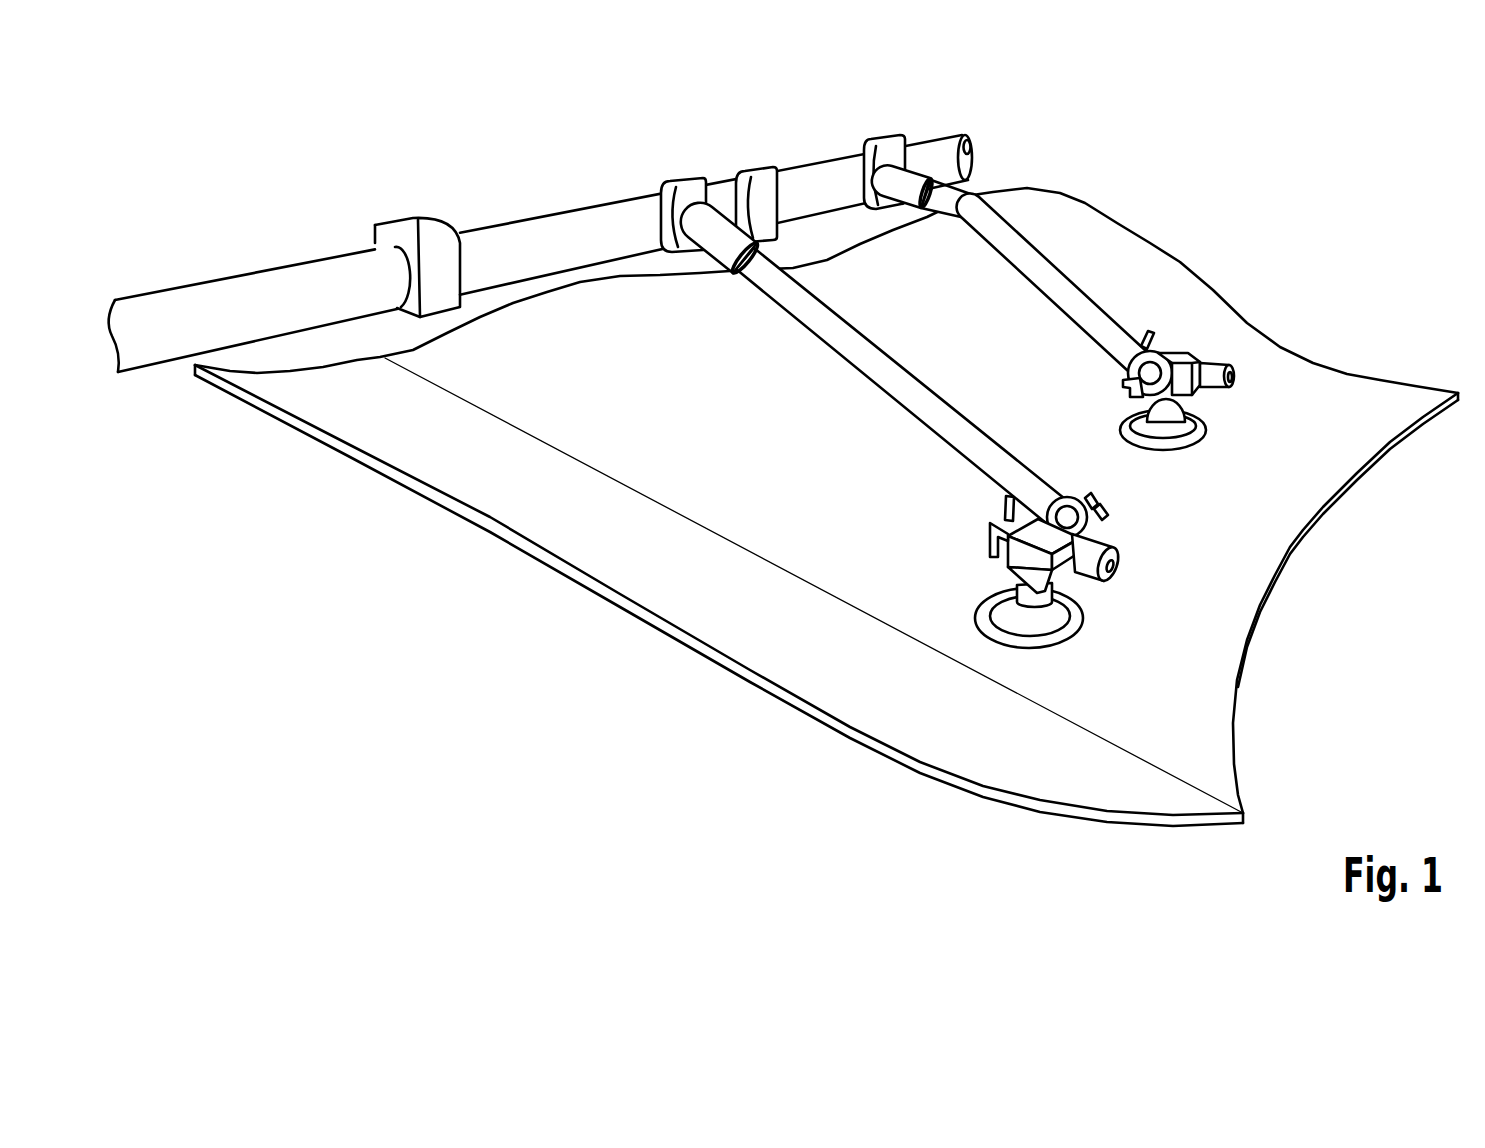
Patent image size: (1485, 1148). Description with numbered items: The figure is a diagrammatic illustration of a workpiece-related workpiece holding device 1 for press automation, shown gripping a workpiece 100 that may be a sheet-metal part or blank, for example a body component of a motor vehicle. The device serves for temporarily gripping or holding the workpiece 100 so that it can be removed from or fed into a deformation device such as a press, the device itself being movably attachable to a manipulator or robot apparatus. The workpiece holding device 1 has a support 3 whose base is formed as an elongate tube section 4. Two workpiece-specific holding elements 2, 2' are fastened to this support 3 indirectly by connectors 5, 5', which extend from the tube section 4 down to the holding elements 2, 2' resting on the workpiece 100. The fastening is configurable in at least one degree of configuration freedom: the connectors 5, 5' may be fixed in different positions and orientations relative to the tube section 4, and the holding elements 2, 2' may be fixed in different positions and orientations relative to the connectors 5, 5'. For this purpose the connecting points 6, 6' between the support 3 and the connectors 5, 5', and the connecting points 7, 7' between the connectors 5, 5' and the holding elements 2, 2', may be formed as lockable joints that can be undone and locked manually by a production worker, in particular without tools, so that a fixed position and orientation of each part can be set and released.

The workpiece holding device 1 is at (402, 165).
The workpiece-specific holding element 2 is at (1062, 615).
The workpiece-specific holding element 2' is at (1196, 424).
The support 3 is at (575, 298).
The tube section 4 is at (561, 228).
The connector 5 is at (903, 388).
The connector 5' is at (1033, 275).
The connecting point 6 is at (721, 278).
The connecting point 6' is at (903, 231).
The connecting point 7 is at (1056, 504).
The connecting point 7' is at (1178, 342).
The workpiece 100 is at (809, 673).